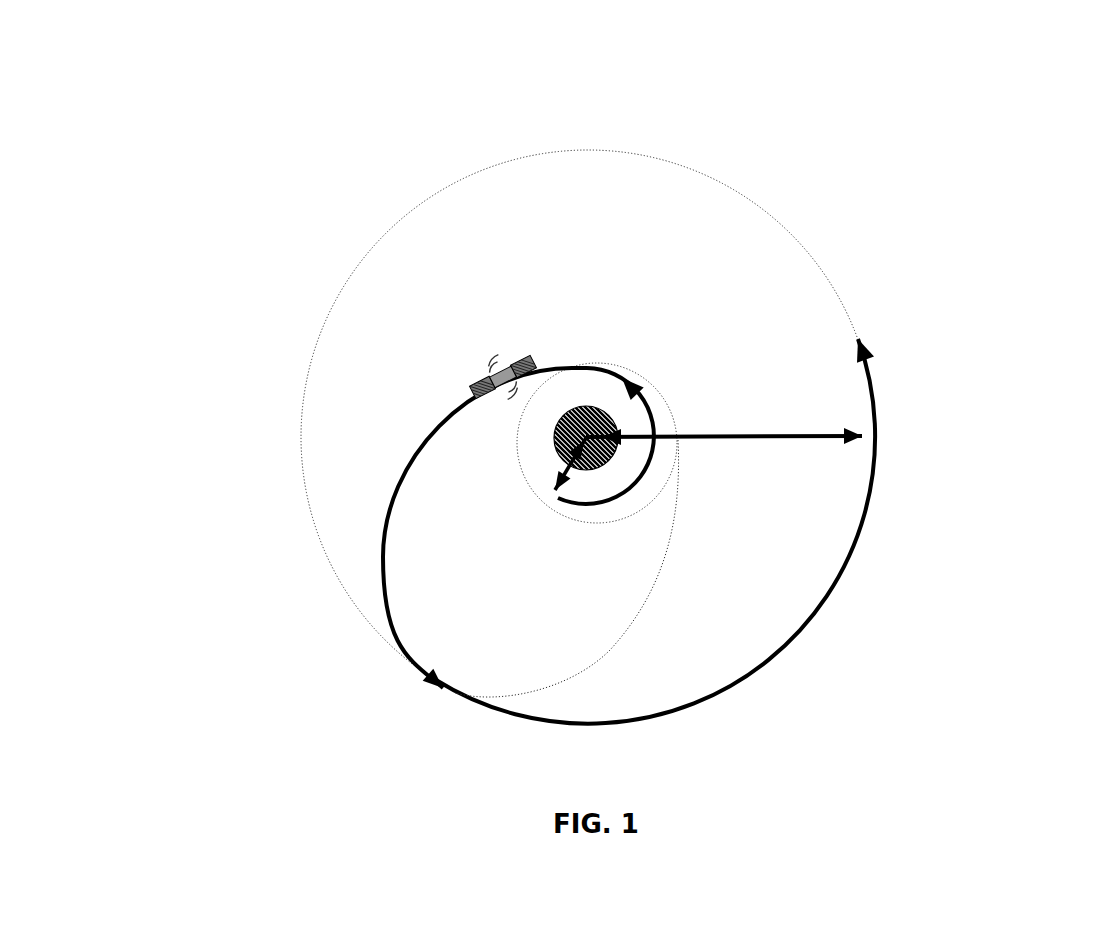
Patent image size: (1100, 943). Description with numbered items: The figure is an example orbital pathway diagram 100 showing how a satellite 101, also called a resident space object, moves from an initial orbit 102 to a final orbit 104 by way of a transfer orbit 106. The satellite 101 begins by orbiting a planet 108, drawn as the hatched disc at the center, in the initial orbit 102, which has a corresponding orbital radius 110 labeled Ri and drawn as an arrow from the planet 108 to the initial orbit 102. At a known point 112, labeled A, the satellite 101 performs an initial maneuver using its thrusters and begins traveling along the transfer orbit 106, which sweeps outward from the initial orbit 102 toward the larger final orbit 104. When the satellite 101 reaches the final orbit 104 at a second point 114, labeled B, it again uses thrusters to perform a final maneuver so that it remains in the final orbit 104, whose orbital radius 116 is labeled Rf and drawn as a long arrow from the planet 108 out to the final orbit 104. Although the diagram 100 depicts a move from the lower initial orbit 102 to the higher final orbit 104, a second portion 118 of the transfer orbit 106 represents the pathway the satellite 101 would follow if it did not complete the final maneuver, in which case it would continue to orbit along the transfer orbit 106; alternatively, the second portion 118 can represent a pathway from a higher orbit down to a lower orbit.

The orbital pathway diagram 100 is at (864, 68).
The satellite 101 is at (480, 380).
The initial orbit 102 is at (655, 455).
The final orbit 104 is at (755, 207).
The transfer orbit 106 is at (403, 463).
The planet 108 is at (584, 405).
The orbital radius 110 is at (564, 486).
The known point 112 is at (628, 378).
The second point 114 is at (440, 690).
The orbital radius 116 is at (738, 396).
The second portion 118 is at (607, 658).